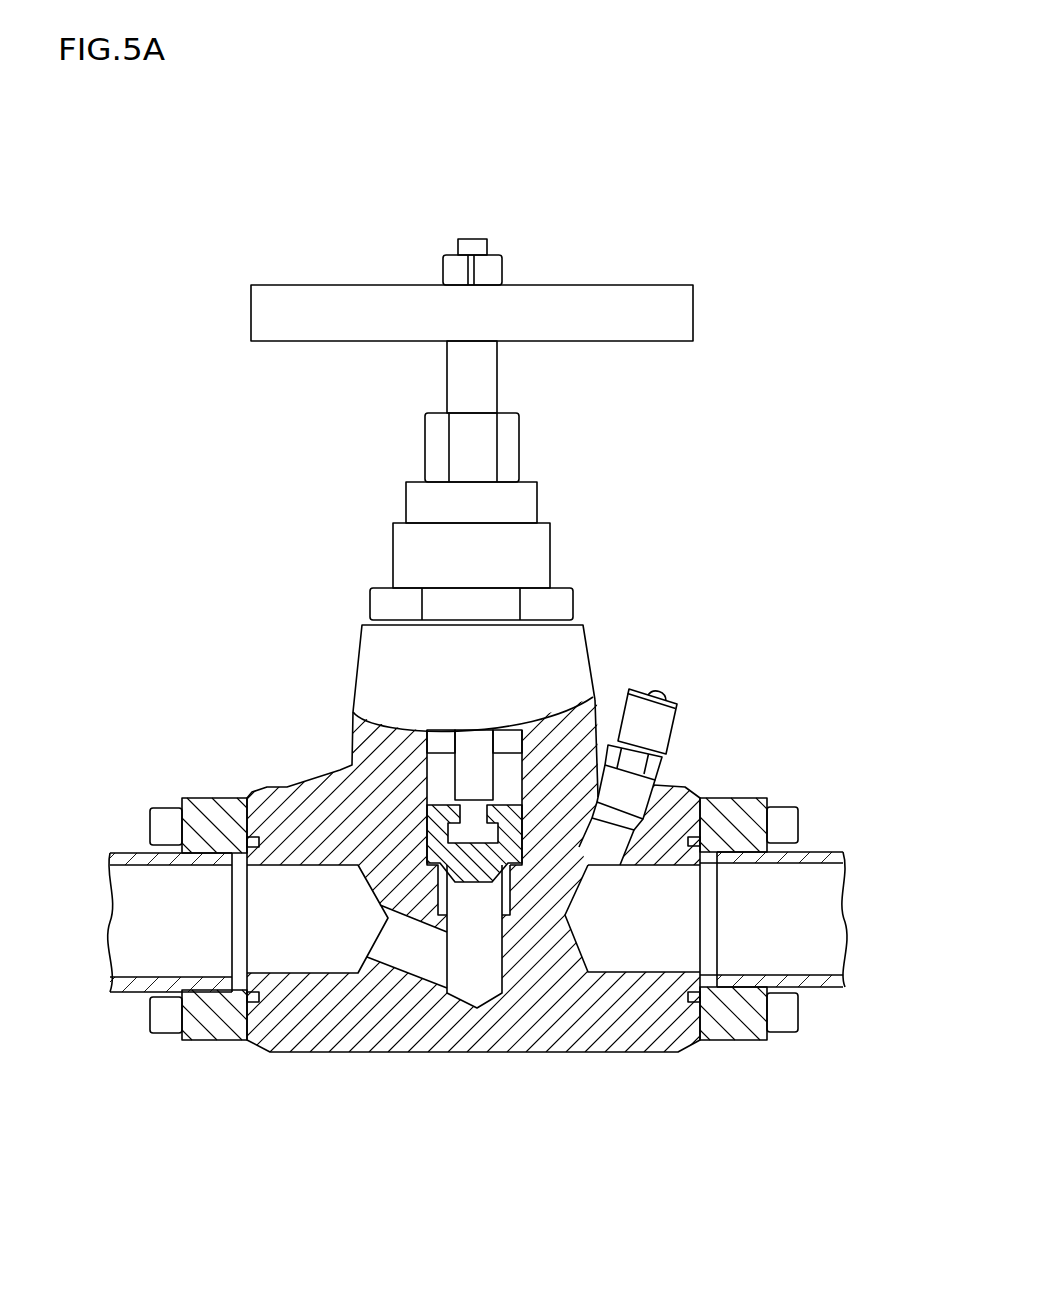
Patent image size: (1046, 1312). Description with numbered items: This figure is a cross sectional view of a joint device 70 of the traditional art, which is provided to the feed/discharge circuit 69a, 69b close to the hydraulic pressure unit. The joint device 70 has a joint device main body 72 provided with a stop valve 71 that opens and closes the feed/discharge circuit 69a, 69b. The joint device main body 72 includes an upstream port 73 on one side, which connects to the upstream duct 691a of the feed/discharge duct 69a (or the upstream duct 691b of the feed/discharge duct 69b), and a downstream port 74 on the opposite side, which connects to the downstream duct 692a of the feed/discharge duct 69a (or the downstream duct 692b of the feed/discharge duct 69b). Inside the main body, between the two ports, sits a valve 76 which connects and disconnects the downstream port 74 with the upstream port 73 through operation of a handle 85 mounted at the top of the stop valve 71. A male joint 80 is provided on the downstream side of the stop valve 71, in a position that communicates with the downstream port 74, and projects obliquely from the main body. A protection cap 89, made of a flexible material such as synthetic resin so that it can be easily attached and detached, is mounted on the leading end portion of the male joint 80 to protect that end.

The joint device 70 is at (755, 195).
The handle 85 is at (263, 318).
The stop valve 71 is at (568, 668).
The joint device main body 72 is at (550, 1020).
The upstream port 73 is at (332, 952).
The downstream port 74 is at (665, 947).
The valve 76 is at (483, 885).
The male joint 80 is at (677, 750).
The protection cap 89 is at (680, 710).
The feed/discharge circuit 69a is at (478, 957).
The feed/discharge circuit 69b is at (478, 957).
The upstream duct 691a is at (143, 842).
The upstream duct 691b is at (171, 834).
The downstream duct 692a is at (805, 987).
The downstream duct 692b is at (787, 1044).